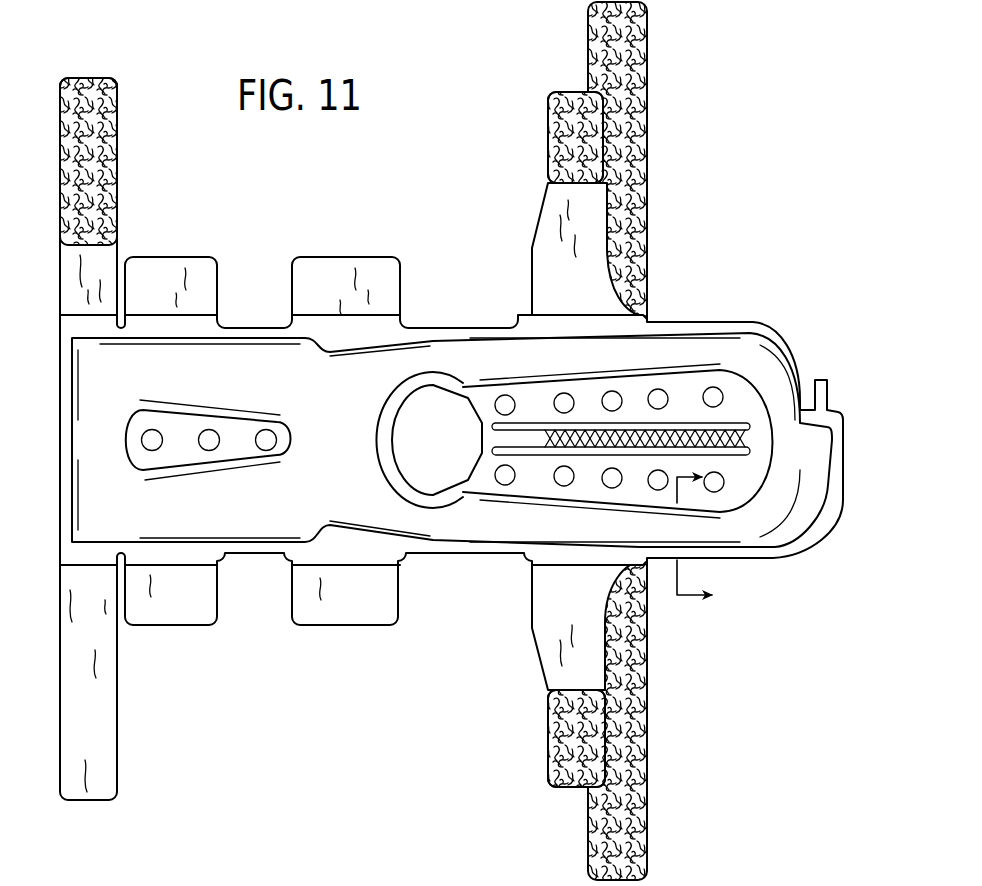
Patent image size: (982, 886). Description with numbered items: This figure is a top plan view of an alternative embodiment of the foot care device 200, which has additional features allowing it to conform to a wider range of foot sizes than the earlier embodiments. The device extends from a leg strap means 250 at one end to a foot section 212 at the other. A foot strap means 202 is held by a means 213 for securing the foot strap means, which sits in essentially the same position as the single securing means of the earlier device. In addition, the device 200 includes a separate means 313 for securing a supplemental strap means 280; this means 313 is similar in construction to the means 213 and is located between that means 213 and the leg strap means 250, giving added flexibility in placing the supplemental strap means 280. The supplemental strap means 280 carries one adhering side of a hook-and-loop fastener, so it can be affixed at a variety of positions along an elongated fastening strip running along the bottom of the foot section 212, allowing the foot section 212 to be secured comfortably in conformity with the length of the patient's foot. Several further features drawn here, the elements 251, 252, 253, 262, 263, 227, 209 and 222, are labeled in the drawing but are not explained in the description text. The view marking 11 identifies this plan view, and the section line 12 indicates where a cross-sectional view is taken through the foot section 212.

The foot care device 200 is at (97, 69).
The leg strap means 250 is at (50, 307).
The adhesive pad 251 is at (110, 102).
The strip portion 252 is at (103, 270).
The second strip 253 is at (105, 670).
The recess 262 is at (115, 372).
The contact plate 263 is at (755, 527).
The holes 227 is at (713, 397).
The means for securing supplemental strap means 313 is at (193, 247).
The means for securing foot strap means 213 is at (322, 256).
The tab surface 209 is at (371, 234).
The view direction 11 is at (232, 234).
The foot strap means 202 is at (534, 205).
The adhesive pad 222 is at (549, 105).
The supplemental strap means 280 is at (664, 36).
The foot section 212 is at (695, 319).
The section line 12- 12 is at (667, 555).